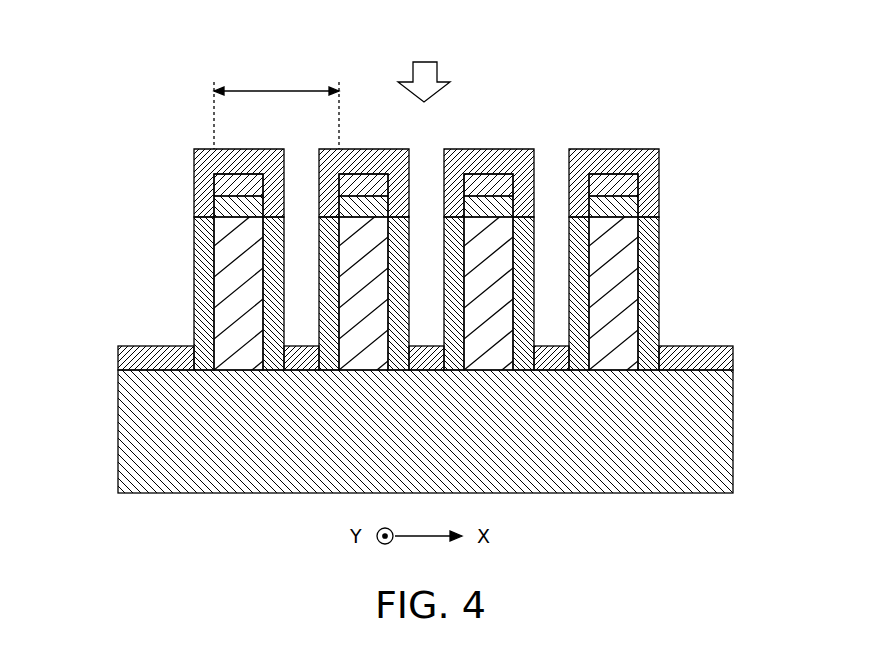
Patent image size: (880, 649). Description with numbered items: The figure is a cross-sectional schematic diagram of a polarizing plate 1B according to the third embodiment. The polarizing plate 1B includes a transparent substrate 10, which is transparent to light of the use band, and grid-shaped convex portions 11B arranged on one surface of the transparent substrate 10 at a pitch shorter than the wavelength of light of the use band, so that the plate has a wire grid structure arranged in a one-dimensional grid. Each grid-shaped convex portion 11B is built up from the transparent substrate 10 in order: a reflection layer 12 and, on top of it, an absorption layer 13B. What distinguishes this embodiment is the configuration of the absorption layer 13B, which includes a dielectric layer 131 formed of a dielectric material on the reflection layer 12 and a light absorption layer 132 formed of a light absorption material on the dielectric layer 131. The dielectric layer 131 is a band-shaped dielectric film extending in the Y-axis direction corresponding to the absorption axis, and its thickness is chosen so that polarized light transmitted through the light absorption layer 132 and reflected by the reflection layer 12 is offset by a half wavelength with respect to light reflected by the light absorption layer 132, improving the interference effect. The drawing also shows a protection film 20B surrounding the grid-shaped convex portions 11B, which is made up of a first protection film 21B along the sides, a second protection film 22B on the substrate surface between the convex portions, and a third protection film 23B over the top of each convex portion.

The polarizing plate 1B is at (672, 50).
The transparent substrate 10 is at (733, 413).
The grid-shaped convex portion 11B is at (718, 140).
The reflection layer 12 is at (197, 293).
The absorption layer 13B is at (102, 167).
The dielectric layer 131 is at (213, 214).
The light absorption layer 132 is at (212, 190).
The protection film 20B is at (767, 187).
The first protection film 21B is at (660, 241).
The second protection film 22B is at (668, 346).
The third protection film 23B is at (660, 195).